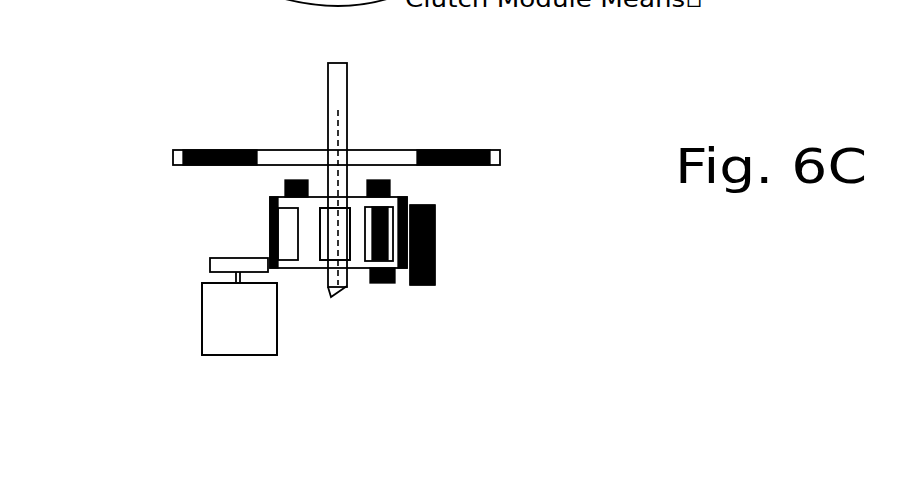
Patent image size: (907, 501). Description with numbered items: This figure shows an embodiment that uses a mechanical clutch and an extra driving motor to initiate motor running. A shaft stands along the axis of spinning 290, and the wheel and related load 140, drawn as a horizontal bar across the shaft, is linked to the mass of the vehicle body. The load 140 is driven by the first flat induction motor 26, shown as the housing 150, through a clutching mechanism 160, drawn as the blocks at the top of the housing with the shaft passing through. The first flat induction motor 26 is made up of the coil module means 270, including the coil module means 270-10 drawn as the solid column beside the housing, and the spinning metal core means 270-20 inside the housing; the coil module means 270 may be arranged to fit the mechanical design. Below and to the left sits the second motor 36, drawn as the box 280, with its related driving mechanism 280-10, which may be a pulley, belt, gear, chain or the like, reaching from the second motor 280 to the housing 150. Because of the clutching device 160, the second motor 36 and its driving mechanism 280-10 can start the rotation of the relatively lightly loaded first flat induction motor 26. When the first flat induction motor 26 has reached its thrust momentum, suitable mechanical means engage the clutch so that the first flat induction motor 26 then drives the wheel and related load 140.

The axis of spinning 290 is at (338, 75).
The wheel and related load 140 is at (322, 160).
The first flat induction motor 150 is at (283, 202).
The clutching mechanism 160 is at (388, 187).
The coil module means 270 is at (395, 283).
The coil module means 270-10 is at (435, 252).
The spinning metal core means 270-20 is at (377, 283).
The first flat induction motor 26 is at (312, 260).
The second motor 280 is at (230, 302).
The driving mechanism 280-10 is at (243, 265).
The second motor 36 is at (242, 327).